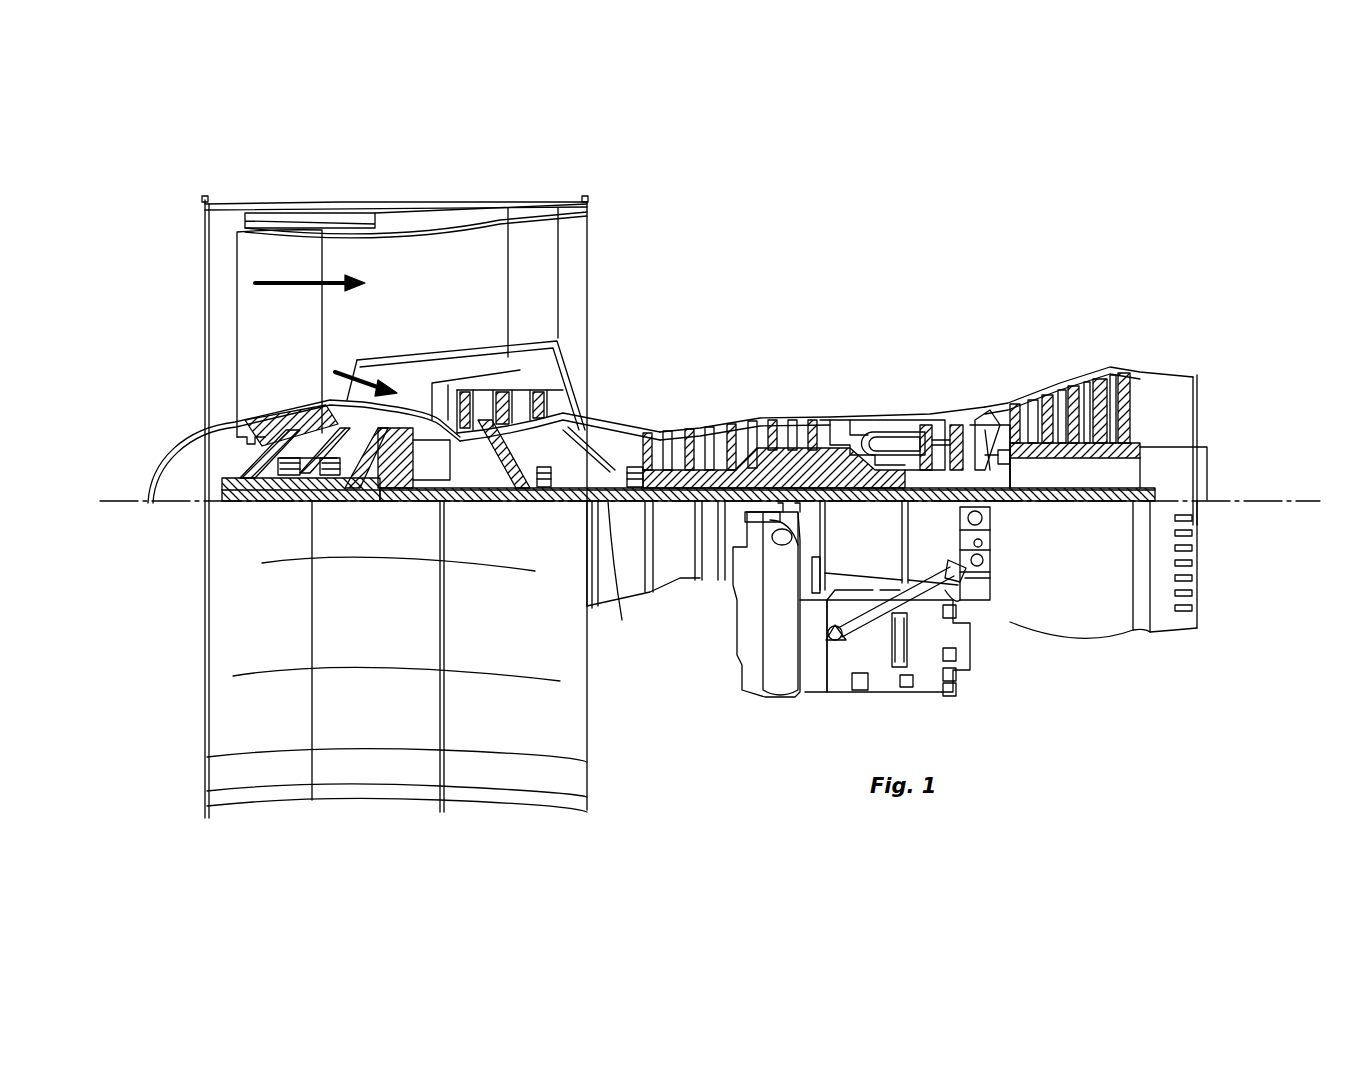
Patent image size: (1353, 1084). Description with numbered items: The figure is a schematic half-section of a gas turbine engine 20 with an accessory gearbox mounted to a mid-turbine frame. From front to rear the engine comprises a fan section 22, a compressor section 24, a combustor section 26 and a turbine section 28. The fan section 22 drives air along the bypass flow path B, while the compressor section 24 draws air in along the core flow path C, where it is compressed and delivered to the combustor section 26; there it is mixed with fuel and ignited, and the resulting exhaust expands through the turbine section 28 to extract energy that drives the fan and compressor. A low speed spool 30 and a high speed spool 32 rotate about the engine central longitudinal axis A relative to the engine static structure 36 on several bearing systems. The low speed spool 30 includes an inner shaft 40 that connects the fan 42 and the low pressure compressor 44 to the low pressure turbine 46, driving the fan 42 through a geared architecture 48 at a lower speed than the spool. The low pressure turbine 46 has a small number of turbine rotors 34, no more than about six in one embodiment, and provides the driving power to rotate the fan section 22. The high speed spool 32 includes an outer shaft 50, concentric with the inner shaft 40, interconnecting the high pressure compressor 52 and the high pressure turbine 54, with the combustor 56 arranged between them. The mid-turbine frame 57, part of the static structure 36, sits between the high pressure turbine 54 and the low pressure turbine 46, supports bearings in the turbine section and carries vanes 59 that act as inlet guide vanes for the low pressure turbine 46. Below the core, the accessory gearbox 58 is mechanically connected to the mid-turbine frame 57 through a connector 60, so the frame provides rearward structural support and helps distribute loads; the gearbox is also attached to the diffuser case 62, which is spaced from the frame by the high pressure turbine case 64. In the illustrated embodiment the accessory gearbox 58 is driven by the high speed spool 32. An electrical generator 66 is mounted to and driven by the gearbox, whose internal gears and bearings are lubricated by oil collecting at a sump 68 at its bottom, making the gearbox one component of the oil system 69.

The gas turbine engine 20 is at (886, 253).
The fan section 22 is at (320, 195).
The compressor section 24 is at (636, 404).
The combustor section 26 is at (902, 399).
The turbine section 28 is at (1081, 383).
The low speed spool 30 is at (570, 506).
The high speed spool 32 is at (797, 466).
The turbine rotors 34 is at (1127, 372).
The engine static structure 36 is at (688, 588).
The inner shaft 40 is at (632, 568).
The fan 42 is at (397, 510).
The low pressure compressor section 44 is at (500, 405).
The low pressure turbine section 46 is at (1077, 373).
The geared architecture 48 is at (398, 486).
The outer shaft 50 is at (755, 488).
The high pressure compressor section 52 is at (727, 470).
The high pressure turbine section 54 is at (937, 423).
The combustor 56 is at (873, 442).
The mid-turbine frame 57 is at (994, 404).
The accessory gearbox 58 is at (748, 632).
The vanes 59 is at (985, 432).
The connector 60 is at (932, 586).
The diffuser case 62 is at (864, 545).
The high pressure turbine case 64 is at (949, 554).
The electrical generator 66 is at (877, 700).
The sump 68 is at (772, 698).
The oil system 69 is at (738, 725).
The engine central longitudinal axis A is at (1298, 500).
The bypass flow path B is at (288, 280).
The core flow path C is at (345, 370).